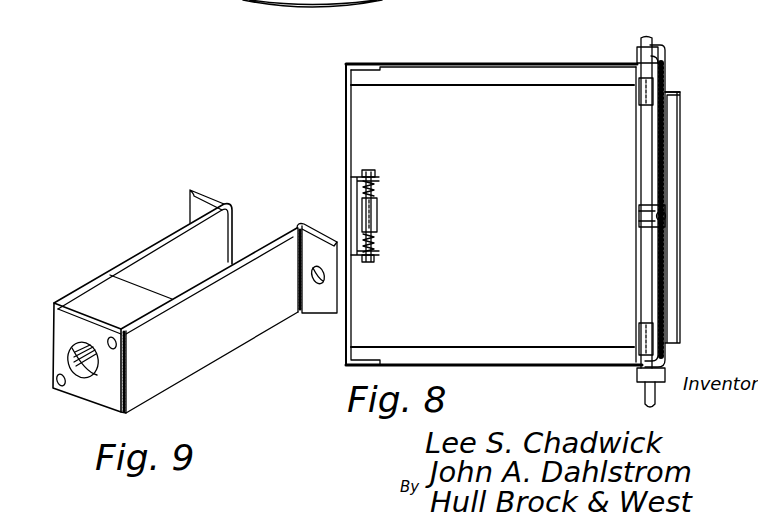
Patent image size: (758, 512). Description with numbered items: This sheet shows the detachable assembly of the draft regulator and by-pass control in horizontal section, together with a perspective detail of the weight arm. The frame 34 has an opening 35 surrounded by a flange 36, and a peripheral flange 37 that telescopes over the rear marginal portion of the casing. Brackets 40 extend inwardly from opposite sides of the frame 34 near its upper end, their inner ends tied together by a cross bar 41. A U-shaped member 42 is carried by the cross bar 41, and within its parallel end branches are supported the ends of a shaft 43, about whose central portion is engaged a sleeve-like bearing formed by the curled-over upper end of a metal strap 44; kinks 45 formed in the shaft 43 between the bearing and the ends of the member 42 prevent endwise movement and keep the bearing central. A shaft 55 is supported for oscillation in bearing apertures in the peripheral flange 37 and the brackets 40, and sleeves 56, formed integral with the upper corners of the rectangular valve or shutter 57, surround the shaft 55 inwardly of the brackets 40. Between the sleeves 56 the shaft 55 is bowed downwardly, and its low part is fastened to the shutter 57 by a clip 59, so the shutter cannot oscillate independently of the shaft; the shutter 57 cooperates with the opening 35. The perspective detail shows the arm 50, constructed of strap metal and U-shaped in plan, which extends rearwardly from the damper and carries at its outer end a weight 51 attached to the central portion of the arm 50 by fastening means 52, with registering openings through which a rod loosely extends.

In FIG. 8, the frame 34 is at (666, 70).
In FIG. 8, the opening 35 is at (670, 150).
In FIG. 8, the flange 36 is at (681, 97).
In FIG. 8, the peripheral flange 37 is at (637, 54).
In FIG. 8, the brackets 40 is at (521, 45).
In FIG. 8, the cross bar 41 is at (346, 122).
In FIG. 8, the U-shaped member 42 is at (364, 175).
In FIG. 8, the shaft 43 is at (372, 259).
In FIG. 8, the metal strap 44 is at (378, 205).
In FIG. 8, the kinks 45 is at (378, 243).
In FIG. 9, the arm 50 is at (232, 333).
In FIG. 9, the weight 51 is at (100, 295).
In FIG. 9, the fastening means 52 is at (117, 346).
In FIG. 8, the shaft 55 is at (652, 45).
In FIG. 8, the sleeves 56 is at (645, 101).
In FIG. 8, the valve or shutter 57 is at (657, 135).
In FIG. 8, the clip 59 is at (640, 207).